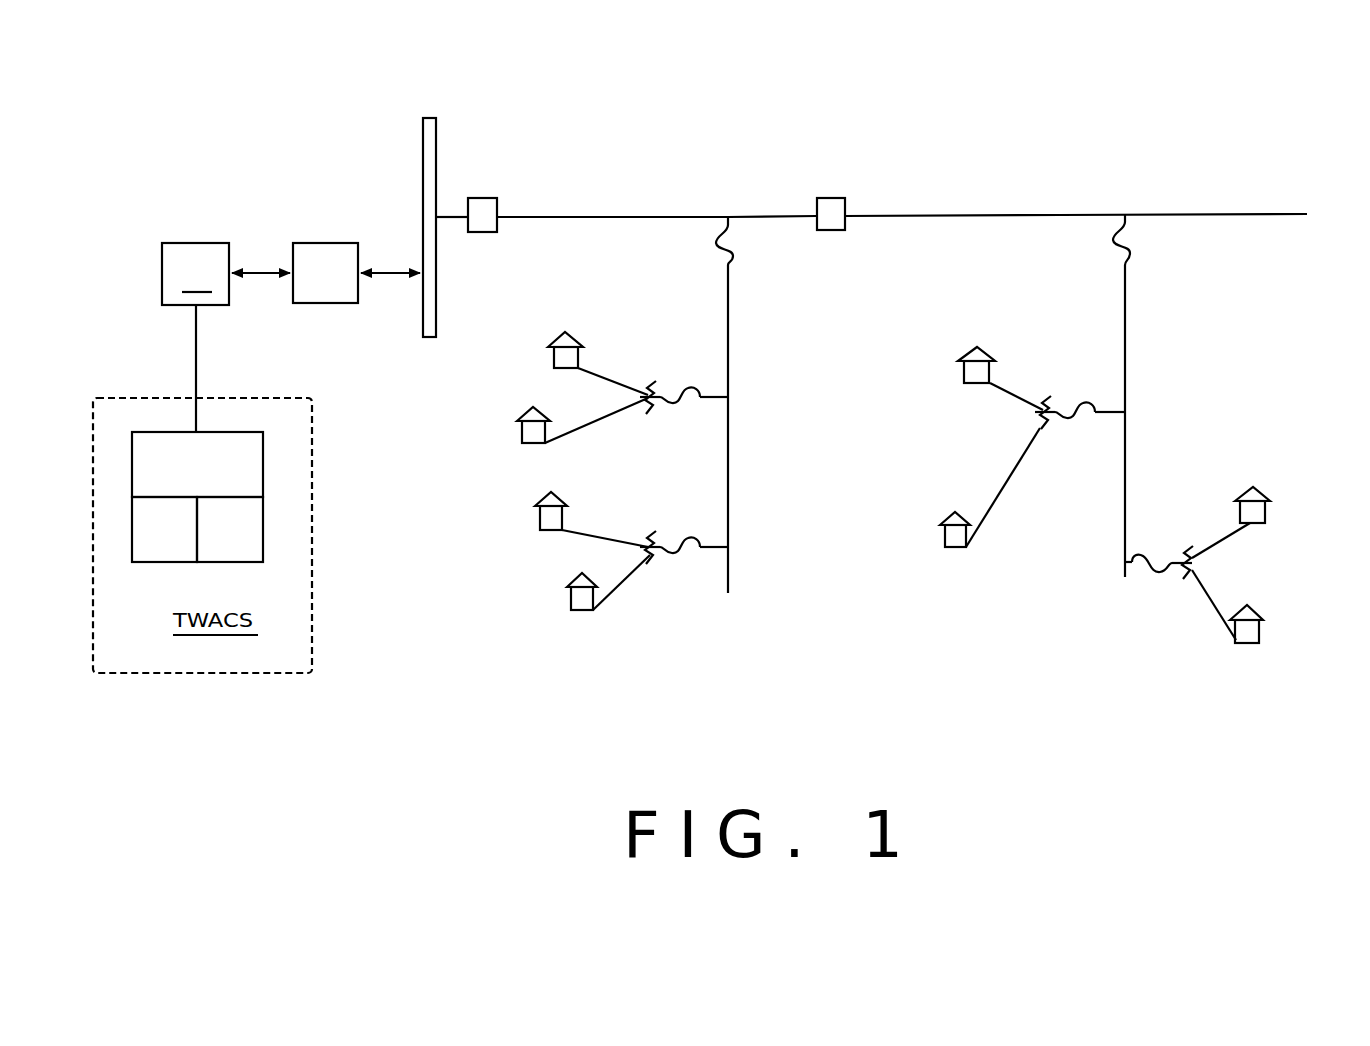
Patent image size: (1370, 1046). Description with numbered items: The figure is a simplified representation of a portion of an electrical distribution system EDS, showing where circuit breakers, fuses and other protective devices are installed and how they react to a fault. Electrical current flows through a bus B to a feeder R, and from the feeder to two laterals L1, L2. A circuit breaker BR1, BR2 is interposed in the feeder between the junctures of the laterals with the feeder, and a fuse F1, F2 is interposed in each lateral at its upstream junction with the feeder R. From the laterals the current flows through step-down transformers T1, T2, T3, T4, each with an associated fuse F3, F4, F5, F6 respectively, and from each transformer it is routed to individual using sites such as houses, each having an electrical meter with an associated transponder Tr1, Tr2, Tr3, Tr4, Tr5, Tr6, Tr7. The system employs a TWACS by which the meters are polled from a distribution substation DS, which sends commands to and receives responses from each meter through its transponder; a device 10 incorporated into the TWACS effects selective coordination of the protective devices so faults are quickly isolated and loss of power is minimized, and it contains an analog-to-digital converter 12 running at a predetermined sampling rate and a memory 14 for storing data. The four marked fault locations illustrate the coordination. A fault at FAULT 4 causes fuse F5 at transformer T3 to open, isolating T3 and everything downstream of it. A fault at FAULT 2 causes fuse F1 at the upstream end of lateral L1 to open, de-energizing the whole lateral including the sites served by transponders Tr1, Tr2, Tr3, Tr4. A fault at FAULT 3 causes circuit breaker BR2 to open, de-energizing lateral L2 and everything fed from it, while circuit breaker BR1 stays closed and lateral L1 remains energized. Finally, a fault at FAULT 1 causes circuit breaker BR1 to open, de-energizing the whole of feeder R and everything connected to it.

The device 10 is at (216, 480).
The analog-to-digital converter 12 is at (150, 544).
The memory 14 is at (217, 544).
The distribution substation DS is at (340, 289).
The bus B is at (420, 187).
The electrical distribution system EDS is at (941, 125).
The feeder R is at (719, 200).
The circuit breaker BR1 is at (476, 232).
The circuit breaker BR2 is at (830, 230).
The lateral L1 is at (716, 320).
The lateral L2 is at (1112, 325).
The fuse F1 is at (720, 249).
The fuse F2 is at (1112, 255).
The fuse F3 is at (689, 407).
The fuse F4 is at (690, 558).
The fuse F5 is at (1090, 417).
The fuse F6 is at (1164, 575).
The step-down transformer T1 is at (681, 380).
The step-down transformer T2 is at (682, 529).
The step-down transformer T3 is at (1080, 397).
The step-down transformer T4 is at (1160, 539).
The transponder Tr1 is at (589, 348).
The transponder Tr2 is at (557, 428).
The transponder Tr3 is at (568, 519).
The transponder Tr4 is at (578, 589).
The transponder Tr5 is at (978, 366).
The transponder Tr6 is at (1093, 535).
The transponder Tr7 is at (1231, 503).
The fault location FAULT 1 is at (600, 217).
The fault location FAULT 2 is at (728, 493).
The fault location FAULT 3 is at (1060, 215).
The fault location FAULT 4 is at (1040, 413).